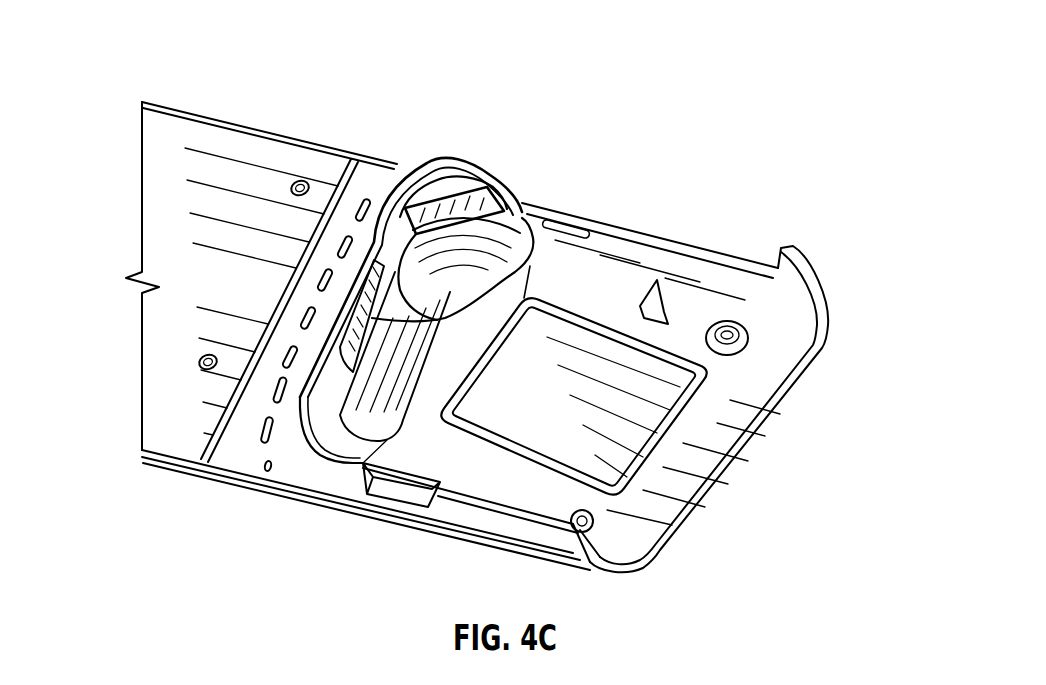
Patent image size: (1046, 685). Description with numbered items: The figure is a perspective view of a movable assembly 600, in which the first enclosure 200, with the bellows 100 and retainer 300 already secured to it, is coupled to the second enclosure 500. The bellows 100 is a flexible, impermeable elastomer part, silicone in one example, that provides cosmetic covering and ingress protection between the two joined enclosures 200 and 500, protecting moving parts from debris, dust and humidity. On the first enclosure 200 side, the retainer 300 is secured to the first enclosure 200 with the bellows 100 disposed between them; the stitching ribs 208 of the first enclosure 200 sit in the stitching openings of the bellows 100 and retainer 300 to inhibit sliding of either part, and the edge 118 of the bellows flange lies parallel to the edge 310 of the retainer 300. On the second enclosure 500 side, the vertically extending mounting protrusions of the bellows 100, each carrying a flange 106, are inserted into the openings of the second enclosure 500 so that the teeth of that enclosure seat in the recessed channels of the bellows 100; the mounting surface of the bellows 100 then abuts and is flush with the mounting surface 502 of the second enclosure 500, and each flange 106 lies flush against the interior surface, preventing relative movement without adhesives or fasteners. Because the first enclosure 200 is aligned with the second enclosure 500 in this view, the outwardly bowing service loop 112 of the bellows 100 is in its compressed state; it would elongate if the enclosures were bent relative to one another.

The bellows 100 is at (471, 142).
The flange 106 is at (370, 320).
The service loop 112 is at (290, 428).
The edge 118 is at (297, 281).
The first enclosure 200 is at (205, 86).
The stitching ribs 208 is at (266, 465).
The retainer 300 is at (378, 176).
The edge 310 is at (296, 324).
The second enclosure 500 is at (802, 236).
The mounting surface 502 is at (388, 253).
The movable assembly 600 is at (551, 99).